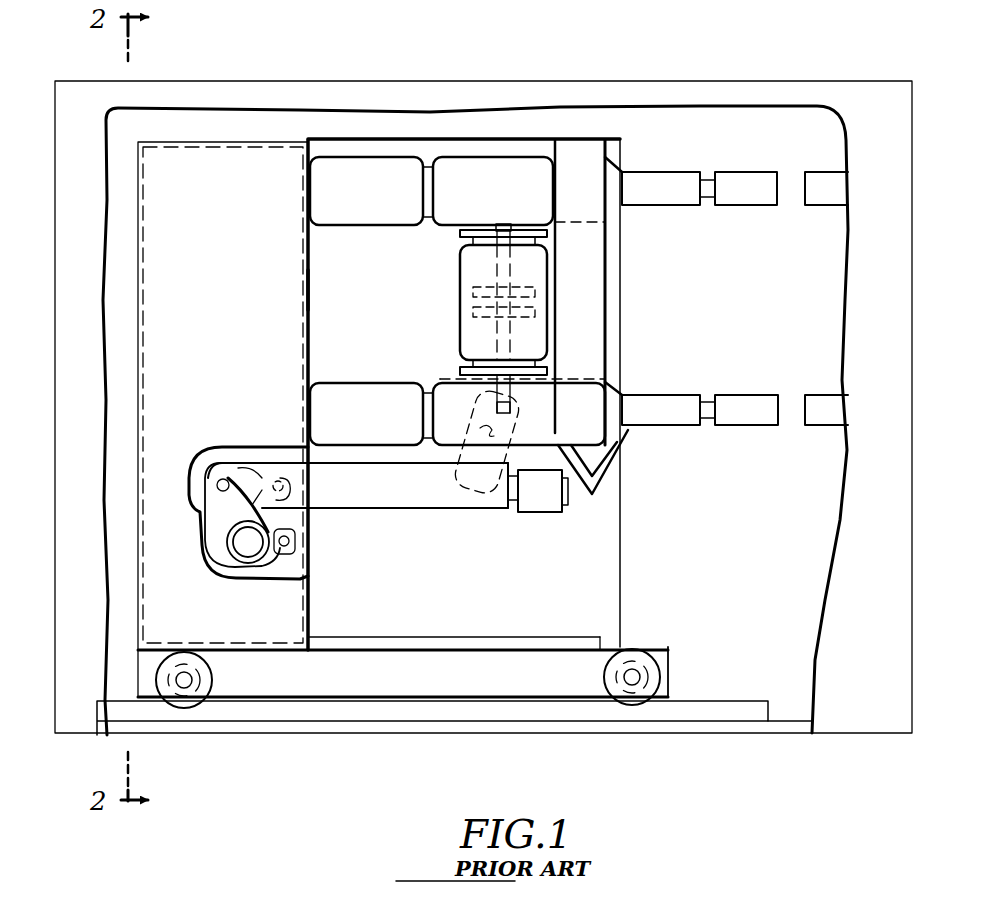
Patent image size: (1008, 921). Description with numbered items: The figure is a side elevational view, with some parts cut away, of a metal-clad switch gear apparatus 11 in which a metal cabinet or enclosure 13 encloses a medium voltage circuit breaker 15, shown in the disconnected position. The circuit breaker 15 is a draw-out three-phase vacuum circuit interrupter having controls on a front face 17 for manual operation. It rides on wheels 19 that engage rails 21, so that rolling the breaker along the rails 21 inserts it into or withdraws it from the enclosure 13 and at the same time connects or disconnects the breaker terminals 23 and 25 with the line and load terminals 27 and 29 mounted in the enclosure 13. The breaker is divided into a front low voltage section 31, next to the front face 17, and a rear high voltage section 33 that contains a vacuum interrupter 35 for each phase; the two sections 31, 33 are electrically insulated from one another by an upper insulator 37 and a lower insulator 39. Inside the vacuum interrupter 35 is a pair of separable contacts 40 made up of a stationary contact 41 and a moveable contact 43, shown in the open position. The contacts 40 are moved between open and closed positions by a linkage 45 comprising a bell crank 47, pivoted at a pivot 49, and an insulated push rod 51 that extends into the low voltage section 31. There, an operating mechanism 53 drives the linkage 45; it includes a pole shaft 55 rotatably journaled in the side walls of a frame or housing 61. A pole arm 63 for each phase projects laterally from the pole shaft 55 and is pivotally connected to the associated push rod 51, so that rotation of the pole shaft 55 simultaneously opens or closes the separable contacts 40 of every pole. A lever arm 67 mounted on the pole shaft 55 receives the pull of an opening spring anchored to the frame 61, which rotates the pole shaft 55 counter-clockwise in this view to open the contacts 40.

The switch gear apparatus 11 is at (503, 45).
The enclosure 13 is at (782, 81).
The circuit breaker 15 is at (648, 558).
The front face 17 is at (138, 222).
The wheels 19 is at (186, 702).
The rails 21 is at (723, 700).
The terminal 23 is at (753, 178).
The terminal 25 is at (753, 398).
The line terminal 27 is at (821, 200).
The load terminal 29 is at (821, 424).
The front low voltage section 31 is at (205, 130).
The rear high voltage section 33 is at (572, 246).
The vacuum interrupter 35 is at (465, 259).
The upper insulator 37 is at (370, 217).
The lower insulator 39 is at (333, 383).
The separable contacts 40 is at (466, 303).
The stationary contact 41 is at (537, 290).
The moveable contact 43 is at (537, 312).
The linkage 45 is at (513, 528).
The bell crank 47 is at (466, 500).
The pivot 49 is at (480, 428).
The insulated push rod 51 is at (362, 500).
The operating mechanism 53 is at (207, 436).
The pole shaft 55 is at (247, 550).
The frame 61 is at (310, 289).
The pole arm 63 is at (236, 472).
The lever arm 67 is at (292, 549).